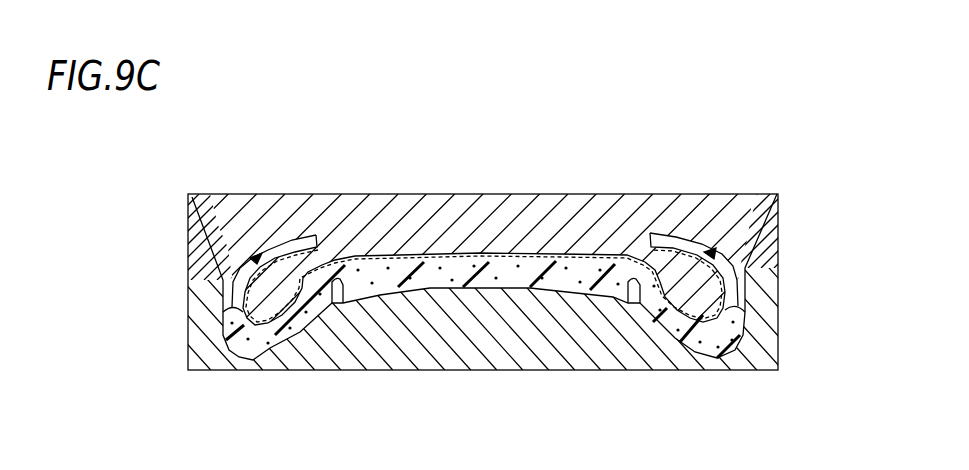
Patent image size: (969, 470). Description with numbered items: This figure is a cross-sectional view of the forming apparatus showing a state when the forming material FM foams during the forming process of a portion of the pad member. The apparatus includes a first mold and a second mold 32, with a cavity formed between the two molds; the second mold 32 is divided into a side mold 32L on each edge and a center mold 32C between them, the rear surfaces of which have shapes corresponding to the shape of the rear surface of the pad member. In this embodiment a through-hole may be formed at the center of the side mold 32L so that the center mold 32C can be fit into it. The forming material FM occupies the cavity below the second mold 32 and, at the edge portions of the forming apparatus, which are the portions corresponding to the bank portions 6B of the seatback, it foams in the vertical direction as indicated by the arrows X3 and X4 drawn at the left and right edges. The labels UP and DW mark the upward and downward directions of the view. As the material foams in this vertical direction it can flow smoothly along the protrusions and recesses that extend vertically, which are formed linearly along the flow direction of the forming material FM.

The bank portions 6B is at (232, 276).
The second mold 32 is at (494, 244).
The center mold 32C is at (402, 228).
The side mold 32L is at (268, 230).
The arrow X3 is at (232, 292).
The arrow X4 is at (739, 291).
The forming material FM is at (398, 288).
The upward direction UP is at (491, 161).
The downward direction DW is at (498, 427).